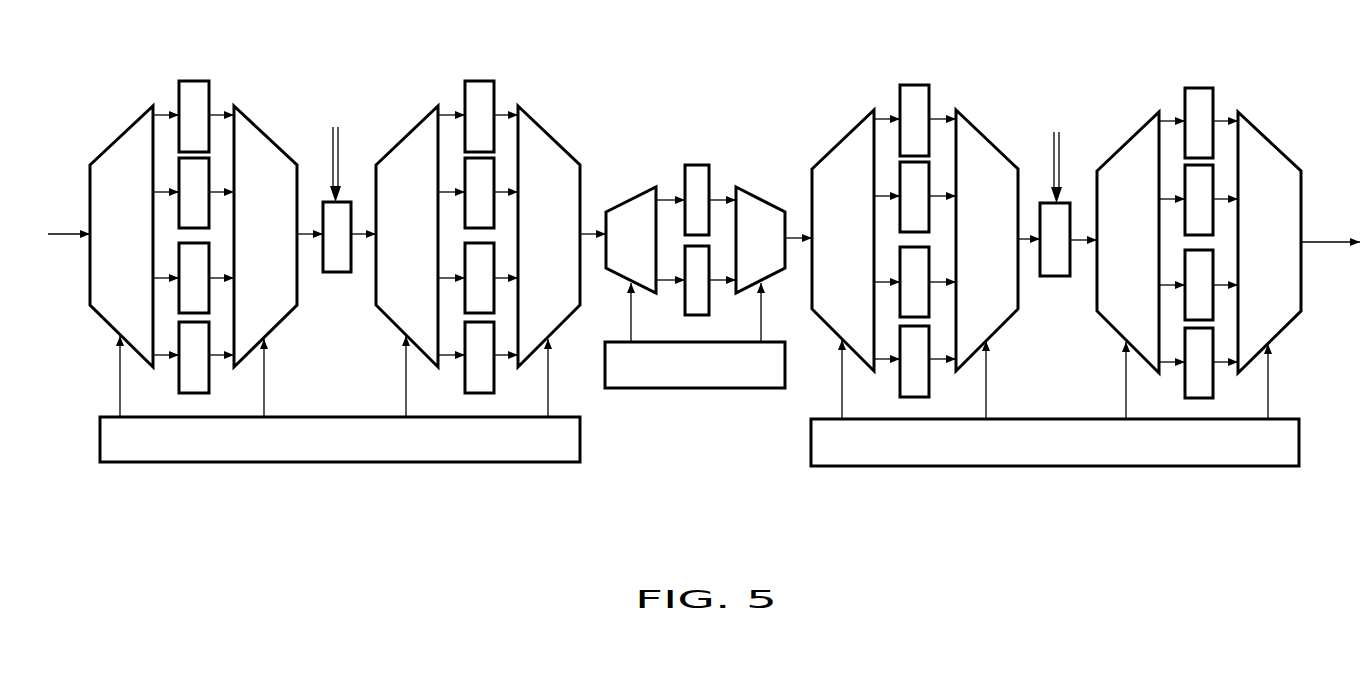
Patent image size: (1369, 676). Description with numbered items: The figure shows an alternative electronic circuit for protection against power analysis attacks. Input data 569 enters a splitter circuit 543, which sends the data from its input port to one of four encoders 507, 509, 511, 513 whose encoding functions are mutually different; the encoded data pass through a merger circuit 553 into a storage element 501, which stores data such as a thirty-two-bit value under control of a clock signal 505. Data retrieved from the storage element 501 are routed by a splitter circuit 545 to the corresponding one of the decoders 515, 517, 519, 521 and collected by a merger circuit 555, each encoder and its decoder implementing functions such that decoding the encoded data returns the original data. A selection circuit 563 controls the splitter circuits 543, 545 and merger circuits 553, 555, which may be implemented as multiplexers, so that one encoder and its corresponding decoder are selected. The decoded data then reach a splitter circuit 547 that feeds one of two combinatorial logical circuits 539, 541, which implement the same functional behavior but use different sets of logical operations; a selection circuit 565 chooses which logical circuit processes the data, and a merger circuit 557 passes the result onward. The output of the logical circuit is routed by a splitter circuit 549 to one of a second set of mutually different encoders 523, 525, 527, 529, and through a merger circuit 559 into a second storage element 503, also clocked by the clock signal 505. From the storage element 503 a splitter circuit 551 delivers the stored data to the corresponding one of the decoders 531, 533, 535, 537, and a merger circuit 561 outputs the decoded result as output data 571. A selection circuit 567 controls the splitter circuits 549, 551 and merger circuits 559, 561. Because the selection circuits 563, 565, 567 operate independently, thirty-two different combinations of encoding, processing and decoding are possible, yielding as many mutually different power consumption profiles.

The storage element 501 is at (336, 272).
The storage element 503 is at (1055, 276).
The clock signal 505 is at (333, 136).
The encoder 507 is at (192, 81).
The encoder 509 is at (209, 177).
The encoder 511 is at (209, 260).
The encoder 513 is at (209, 328).
The decoder 515 is at (478, 81).
The decoder 517 is at (494, 177).
The decoder 519 is at (494, 260).
The decoder 521 is at (494, 328).
The encoder 523 is at (913, 85).
The encoder 525 is at (929, 181).
The encoder 527 is at (929, 263).
The encoder 529 is at (929, 332).
The decoder 531 is at (1198, 88).
The decoder 533 is at (1213, 184).
The decoder 535 is at (1213, 265).
The decoder 537 is at (1213, 334).
The logical circuit 539 is at (697, 165).
The logical circuit 541 is at (709, 297).
The splitter circuit 543 is at (123, 134).
The splitter circuit 545 is at (409, 133).
The splitter circuit 547 is at (633, 198).
The splitter circuit 549 is at (846, 137).
The splitter circuit 551 is at (1130, 140).
The merger circuit 553 is at (278, 324).
The merger circuit 555 is at (549, 134).
The merger circuit 557 is at (762, 200).
The merger circuit 559 is at (999, 329).
The merger circuit 561 is at (1283, 330).
The selection circuit 563 is at (357, 463).
The selection circuit 565 is at (694, 388).
The selection circuit 567 is at (1032, 467).
The input data 569 is at (63, 235).
The output data 571 is at (1335, 243).